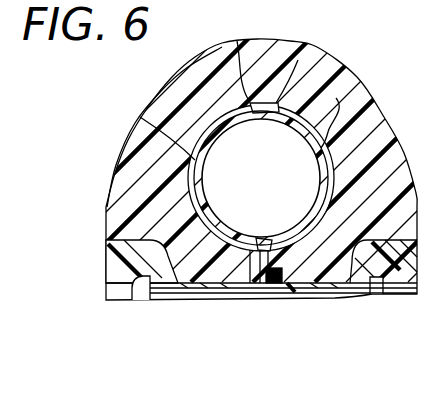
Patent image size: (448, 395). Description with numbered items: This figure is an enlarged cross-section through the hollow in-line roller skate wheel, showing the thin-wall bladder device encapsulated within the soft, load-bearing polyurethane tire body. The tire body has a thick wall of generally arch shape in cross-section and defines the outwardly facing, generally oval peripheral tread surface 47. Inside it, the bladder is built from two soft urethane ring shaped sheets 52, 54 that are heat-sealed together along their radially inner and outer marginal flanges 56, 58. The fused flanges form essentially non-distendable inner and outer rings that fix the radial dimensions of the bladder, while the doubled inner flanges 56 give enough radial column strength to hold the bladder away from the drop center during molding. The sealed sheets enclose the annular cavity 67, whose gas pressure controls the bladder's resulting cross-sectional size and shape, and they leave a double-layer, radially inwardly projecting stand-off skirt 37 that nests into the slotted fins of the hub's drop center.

The stand-off skirt 37 is at (281, 273).
The peripheral tread surface 47 is at (402, 137).
The ring shaped sheet 52 is at (146, 117).
The ring shaped sheet 54 is at (336, 98).
The radially inner marginal flange 56 is at (243, 285).
The radially outer marginal flange 58 is at (245, 97).
The annular cavity 67 is at (318, 175).